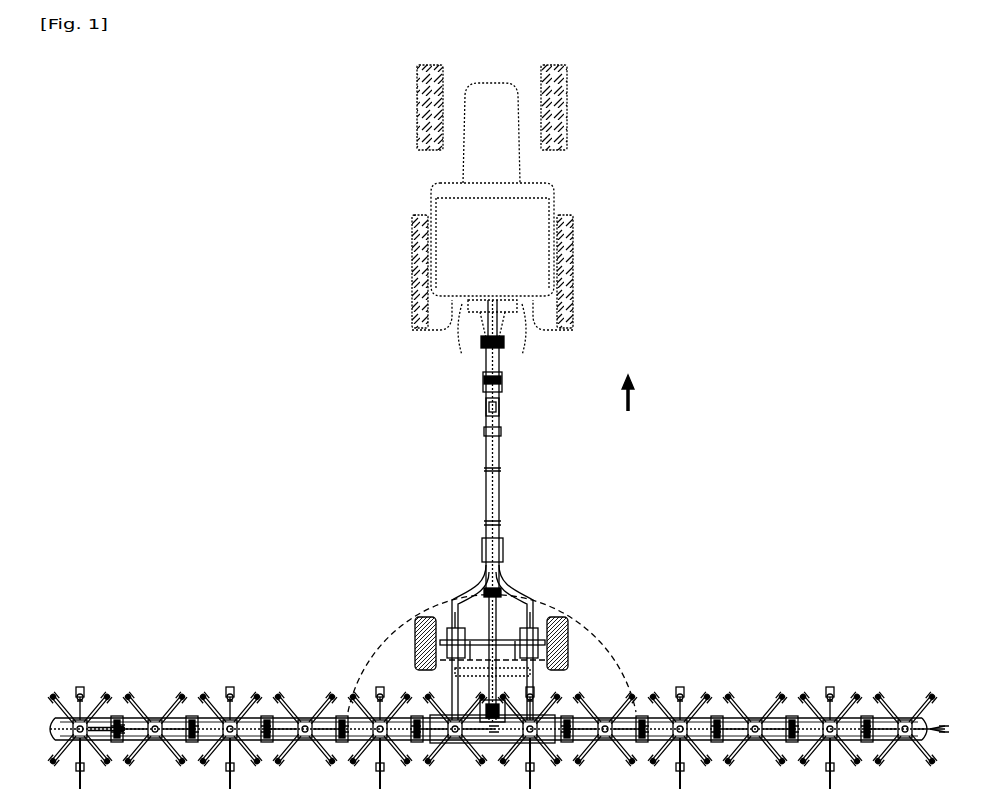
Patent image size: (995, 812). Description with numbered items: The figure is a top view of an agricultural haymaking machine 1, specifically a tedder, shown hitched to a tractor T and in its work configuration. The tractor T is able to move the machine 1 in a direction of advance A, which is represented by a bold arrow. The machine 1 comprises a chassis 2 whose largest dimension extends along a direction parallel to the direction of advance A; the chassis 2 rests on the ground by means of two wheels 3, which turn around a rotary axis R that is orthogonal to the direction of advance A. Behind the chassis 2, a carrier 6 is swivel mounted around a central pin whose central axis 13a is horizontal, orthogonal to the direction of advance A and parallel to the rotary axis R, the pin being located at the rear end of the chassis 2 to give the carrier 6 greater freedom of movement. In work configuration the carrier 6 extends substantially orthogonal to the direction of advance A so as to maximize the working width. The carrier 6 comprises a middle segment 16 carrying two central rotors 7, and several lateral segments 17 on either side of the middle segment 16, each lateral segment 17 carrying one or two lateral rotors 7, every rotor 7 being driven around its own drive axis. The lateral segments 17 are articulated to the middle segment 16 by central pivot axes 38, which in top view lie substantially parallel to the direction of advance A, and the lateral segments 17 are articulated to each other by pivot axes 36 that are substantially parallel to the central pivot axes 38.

The agricultural haymaking machine 1 is at (233, 352).
The chassis 2 is at (489, 512).
The wheel 3 is at (533, 625).
The carrier 6 is at (299, 617).
The rotor 7 is at (81, 692).
The central axis 13a is at (570, 642).
The middle segment 16 is at (510, 746).
The lateral segment 17 is at (917, 756).
The pivot axis 36 is at (118, 745).
The central pivot axis 38 is at (417, 745).
The rotary axis R is at (414, 646).
The tractor T is at (336, 288).
The direction of advance A is at (618, 398).